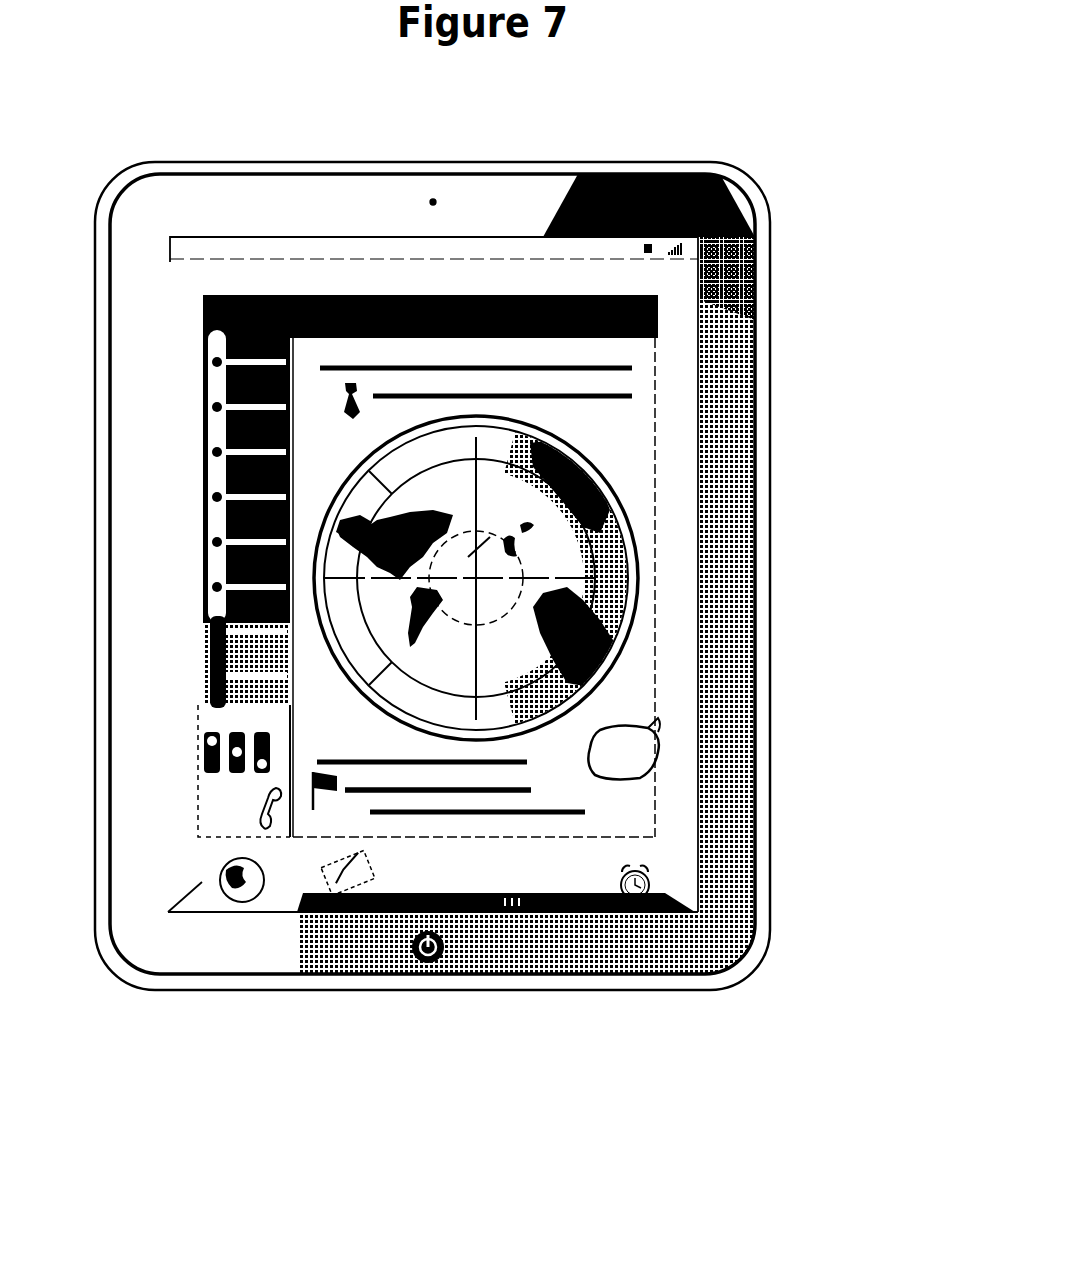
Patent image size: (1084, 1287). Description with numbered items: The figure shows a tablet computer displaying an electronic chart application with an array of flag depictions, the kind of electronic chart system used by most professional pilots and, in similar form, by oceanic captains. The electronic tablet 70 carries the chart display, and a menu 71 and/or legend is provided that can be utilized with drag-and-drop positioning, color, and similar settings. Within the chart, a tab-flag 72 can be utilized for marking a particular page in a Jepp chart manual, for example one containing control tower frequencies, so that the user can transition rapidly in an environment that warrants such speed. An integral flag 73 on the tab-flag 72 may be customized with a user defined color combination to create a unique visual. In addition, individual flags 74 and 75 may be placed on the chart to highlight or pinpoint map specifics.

The electronic tablet 70 is at (727, 172).
The menu 71 is at (241, 853).
The tab-flag 72 is at (638, 797).
The integral flag 73 is at (667, 755).
The individual flag 74 is at (556, 540).
The individual flag 75 is at (323, 417).